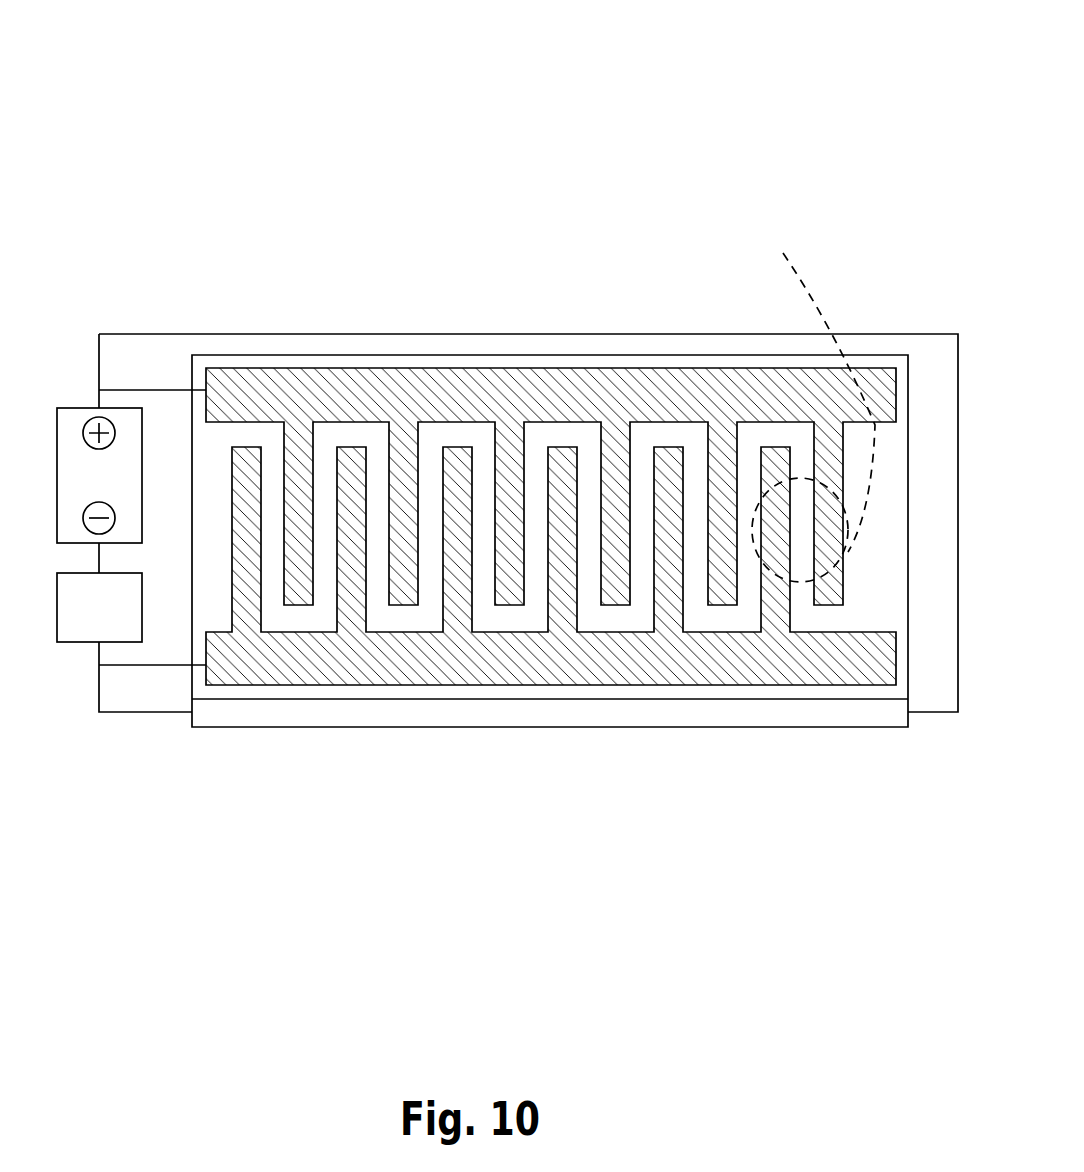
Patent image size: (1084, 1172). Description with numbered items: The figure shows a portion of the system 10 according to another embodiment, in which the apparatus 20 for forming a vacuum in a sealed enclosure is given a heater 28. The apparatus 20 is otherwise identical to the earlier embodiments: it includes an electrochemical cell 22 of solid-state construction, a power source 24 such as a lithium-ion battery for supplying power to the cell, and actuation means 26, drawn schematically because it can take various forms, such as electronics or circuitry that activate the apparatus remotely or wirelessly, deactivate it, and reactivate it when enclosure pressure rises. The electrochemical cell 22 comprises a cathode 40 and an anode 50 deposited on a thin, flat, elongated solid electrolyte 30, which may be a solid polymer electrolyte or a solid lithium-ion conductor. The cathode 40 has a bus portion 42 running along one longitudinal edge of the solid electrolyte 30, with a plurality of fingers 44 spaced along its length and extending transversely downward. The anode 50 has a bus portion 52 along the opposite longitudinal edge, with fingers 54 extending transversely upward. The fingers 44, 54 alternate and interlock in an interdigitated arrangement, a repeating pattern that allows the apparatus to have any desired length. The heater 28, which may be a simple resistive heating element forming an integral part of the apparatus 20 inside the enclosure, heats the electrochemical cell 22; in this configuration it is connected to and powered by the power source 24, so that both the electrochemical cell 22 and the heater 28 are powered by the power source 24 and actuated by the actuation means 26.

The system 10 is at (96, 140).
The apparatus 20 is at (182, 210).
The electrochemical cell 22 is at (450, 247).
The power source 24 is at (63, 408).
The actuation means 26 is at (60, 645).
The heater 28 is at (253, 727).
The solid electrolyte 30 is at (493, 362).
The cathode 40 is at (316, 382).
The bus portion 42 is at (396, 385).
The fingers 44 is at (773, 450).
The anode 50 is at (697, 684).
The bus portion 52 is at (773, 698).
The fingers 54 is at (617, 602).